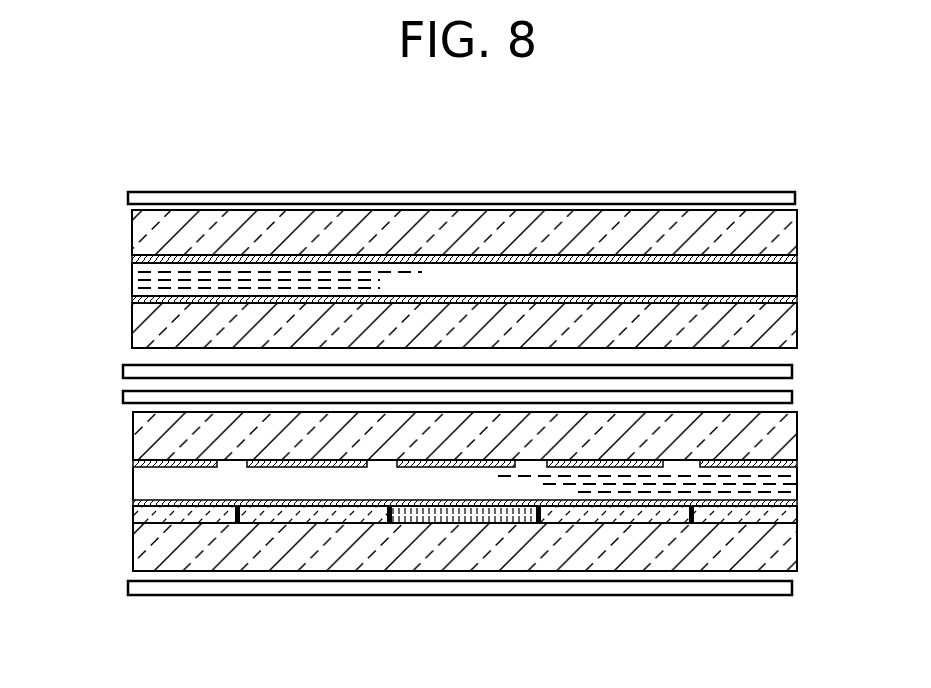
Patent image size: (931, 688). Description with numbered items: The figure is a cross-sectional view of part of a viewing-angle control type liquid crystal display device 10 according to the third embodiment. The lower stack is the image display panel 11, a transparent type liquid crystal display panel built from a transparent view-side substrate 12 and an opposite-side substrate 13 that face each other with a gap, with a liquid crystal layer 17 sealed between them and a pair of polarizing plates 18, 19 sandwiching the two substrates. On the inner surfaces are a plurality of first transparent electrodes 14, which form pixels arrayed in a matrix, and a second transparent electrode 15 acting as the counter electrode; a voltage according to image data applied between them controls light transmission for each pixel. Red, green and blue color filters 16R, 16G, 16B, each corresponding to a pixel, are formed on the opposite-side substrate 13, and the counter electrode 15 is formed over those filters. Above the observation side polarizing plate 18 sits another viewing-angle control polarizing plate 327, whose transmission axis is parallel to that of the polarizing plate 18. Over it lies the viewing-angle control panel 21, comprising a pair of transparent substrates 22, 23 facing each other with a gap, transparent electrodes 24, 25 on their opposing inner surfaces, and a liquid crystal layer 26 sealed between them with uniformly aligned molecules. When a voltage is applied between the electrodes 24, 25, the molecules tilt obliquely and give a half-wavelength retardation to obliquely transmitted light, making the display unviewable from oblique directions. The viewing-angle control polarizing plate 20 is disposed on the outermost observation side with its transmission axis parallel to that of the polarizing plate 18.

The liquid crystal display device 10 is at (146, 192).
The viewing-angle control panel 21 is at (130, 220).
The viewing-angle control polarizing plate 20 is at (773, 198).
The transparent substrate 22 is at (137, 232).
The transparent electrode 24 is at (377, 262).
The liquid crystal layer 26 is at (135, 287).
The transparent electrode 25 is at (493, 297).
The transparent substrate 23 is at (137, 333).
The viewing-angle control polarizing plate 327 is at (790, 370).
The image display panel 11 is at (112, 392).
The polarizing plate 18 is at (790, 395).
The view-side substrate 12 is at (785, 440).
The first transparent electrode 14 is at (273, 467).
The liquid crystal layer 17 is at (787, 490).
The second transparent electrode 15 is at (420, 505).
The red color filter 16R is at (197, 521).
The green color filter 16G is at (345, 521).
The blue color filter 16B is at (497, 515).
The opposite-side substrate 13 is at (785, 552).
The polarizing plate 19 is at (787, 594).